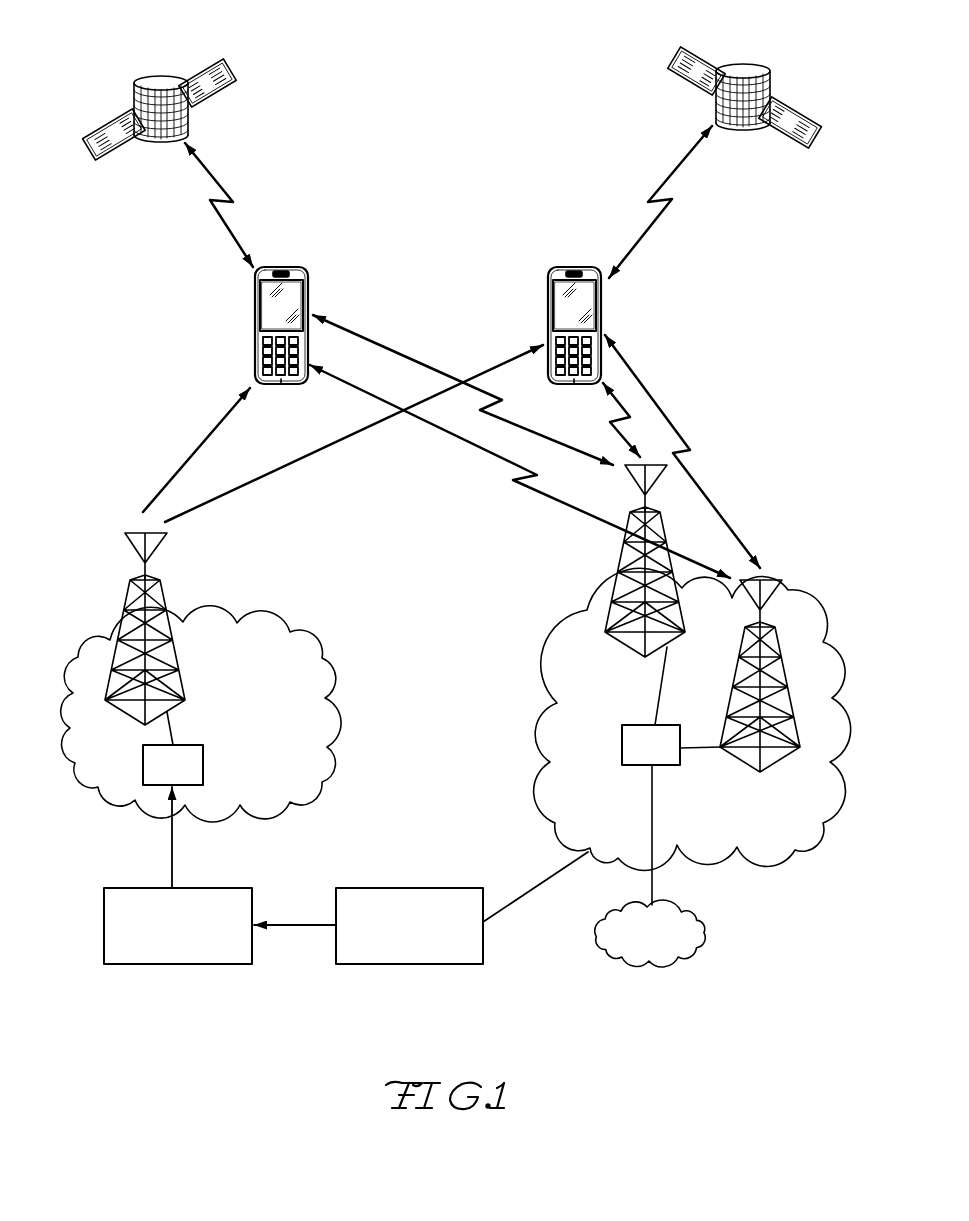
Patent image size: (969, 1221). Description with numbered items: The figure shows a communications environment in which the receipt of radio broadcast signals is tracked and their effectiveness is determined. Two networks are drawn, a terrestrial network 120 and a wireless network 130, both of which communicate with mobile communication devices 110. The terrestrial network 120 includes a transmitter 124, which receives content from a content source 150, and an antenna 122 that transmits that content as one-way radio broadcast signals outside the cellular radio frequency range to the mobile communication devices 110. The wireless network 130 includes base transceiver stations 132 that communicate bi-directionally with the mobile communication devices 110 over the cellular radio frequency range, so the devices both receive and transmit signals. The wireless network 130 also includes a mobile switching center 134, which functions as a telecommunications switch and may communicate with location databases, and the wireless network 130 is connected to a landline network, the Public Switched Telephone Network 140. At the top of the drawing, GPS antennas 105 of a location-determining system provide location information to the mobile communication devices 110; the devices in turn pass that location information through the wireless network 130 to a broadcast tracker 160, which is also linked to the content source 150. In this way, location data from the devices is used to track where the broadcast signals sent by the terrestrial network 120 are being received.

The GPS antennas 105 is at (155, 80).
The mobile communication devices 110 is at (283, 262).
The terrestrial network 120 is at (201, 677).
The antenna 122 is at (130, 585).
The transmitter 124 is at (203, 768).
The wireless network 130 is at (692, 709).
The base transceiver stations 132 is at (617, 580).
The mobile switching center 134 is at (622, 745).
The Public Switched Telephone Network 140 is at (647, 962).
The content source 150 is at (172, 966).
The broadcast tracker 160 is at (408, 966).